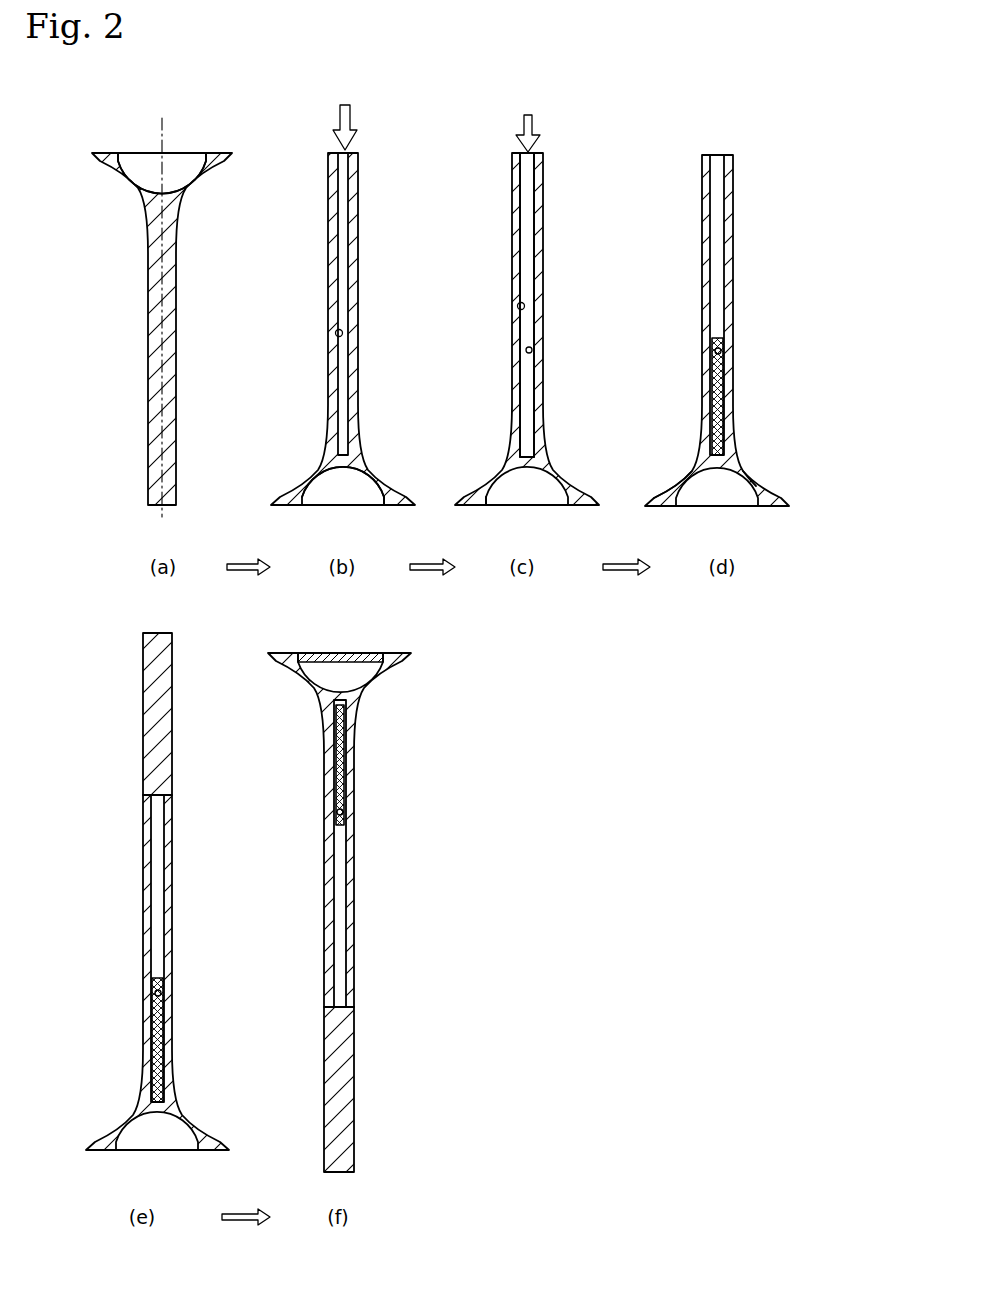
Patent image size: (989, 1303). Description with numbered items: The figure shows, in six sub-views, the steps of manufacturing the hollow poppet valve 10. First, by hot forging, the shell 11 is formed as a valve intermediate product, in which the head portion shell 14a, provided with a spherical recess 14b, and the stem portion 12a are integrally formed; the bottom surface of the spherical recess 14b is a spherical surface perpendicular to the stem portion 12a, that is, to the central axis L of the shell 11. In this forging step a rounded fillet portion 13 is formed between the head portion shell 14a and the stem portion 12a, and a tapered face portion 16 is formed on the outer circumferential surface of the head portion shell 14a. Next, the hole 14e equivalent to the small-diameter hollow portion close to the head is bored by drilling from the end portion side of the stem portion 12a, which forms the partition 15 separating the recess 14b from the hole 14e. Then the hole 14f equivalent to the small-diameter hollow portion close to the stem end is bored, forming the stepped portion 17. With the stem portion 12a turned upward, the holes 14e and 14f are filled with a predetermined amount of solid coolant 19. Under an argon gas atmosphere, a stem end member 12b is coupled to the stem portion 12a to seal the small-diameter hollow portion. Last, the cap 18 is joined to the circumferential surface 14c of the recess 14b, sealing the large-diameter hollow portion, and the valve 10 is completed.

The hollow poppet valve 10 is at (318, 920).
The shell 11 is at (237, 195).
The stem portion 12a is at (177, 275).
The stem end member 12b is at (174, 713).
The fillet portion 13 is at (140, 195).
The head portion shell 14a is at (200, 190).
The spherical recess 14b is at (156, 186).
The circumferential surface of the recess 14c is at (203, 152).
The hole 14e is at (336, 334).
The hole 14f is at (518, 306).
The partition 15 is at (341, 475).
The tapered face portion 16 is at (98, 163).
The stepped portion 17 is at (536, 350).
The cap 18 is at (372, 658).
The coolant 19 is at (722, 388).
The central axis L is at (166, 140).